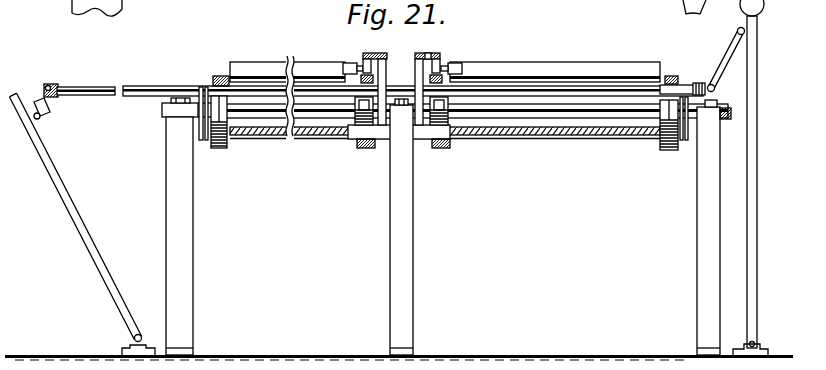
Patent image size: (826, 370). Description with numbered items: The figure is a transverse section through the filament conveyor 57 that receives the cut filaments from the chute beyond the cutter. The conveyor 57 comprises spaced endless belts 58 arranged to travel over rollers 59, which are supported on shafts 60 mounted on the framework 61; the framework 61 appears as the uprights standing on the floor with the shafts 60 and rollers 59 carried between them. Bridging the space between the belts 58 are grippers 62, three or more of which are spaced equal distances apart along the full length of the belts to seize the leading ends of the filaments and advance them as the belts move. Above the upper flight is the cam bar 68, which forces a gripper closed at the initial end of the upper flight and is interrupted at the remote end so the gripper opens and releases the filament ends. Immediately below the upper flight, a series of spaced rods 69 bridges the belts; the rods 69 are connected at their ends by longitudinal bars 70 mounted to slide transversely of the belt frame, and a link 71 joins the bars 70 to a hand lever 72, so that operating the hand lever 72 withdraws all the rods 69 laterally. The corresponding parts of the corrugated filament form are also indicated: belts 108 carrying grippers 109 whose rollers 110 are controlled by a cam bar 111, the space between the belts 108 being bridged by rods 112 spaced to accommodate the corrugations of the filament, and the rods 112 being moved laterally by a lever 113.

The conveyor 57 is at (220, 77).
The endless belts 58 is at (220, 148).
The rollers 59 is at (217, 117).
The shafts 60 is at (326, 115).
The framework 61 is at (192, 226).
The grippers 62 is at (311, 64).
The cam bar 68 is at (370, 78).
The rods 69 is at (107, 86).
The longitudinal bars 70 is at (52, 82).
The link 71 is at (48, 108).
The hand lever 72 is at (60, 169).
The belts 108 is at (450, 64).
The grippers 109 is at (550, 61).
The rollers 110 is at (455, 57).
The cam bar 111 is at (434, 57).
The rods 112 is at (671, 70).
The lever 113 is at (757, 125).